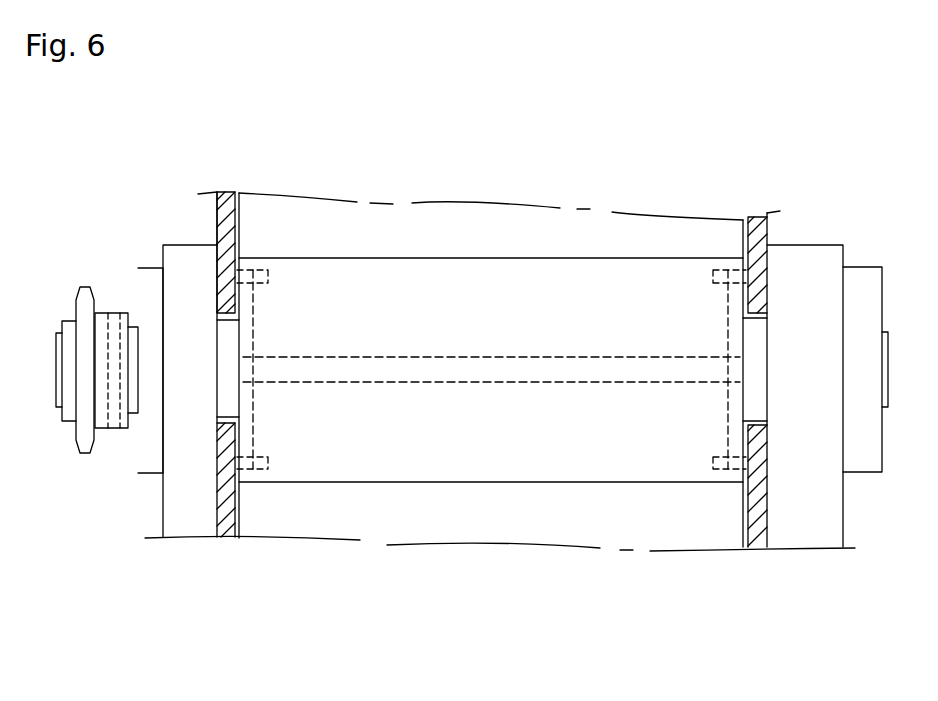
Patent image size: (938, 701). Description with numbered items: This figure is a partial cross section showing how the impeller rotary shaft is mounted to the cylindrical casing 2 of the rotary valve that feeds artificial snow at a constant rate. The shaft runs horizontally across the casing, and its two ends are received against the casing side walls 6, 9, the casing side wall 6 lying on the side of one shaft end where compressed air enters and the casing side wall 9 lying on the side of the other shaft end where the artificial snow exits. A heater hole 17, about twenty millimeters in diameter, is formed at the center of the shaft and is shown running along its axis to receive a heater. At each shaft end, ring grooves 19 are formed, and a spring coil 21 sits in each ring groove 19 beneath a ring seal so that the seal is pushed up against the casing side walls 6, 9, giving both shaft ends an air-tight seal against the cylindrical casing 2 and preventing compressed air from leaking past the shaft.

The cylindrical casing 2 is at (225, 508).
The casing side wall 6 is at (222, 208).
The casing side wall 9 is at (757, 232).
The heater hole 17 is at (588, 370).
The ring grooves 19 is at (735, 410).
The spring coil 21 is at (267, 272).